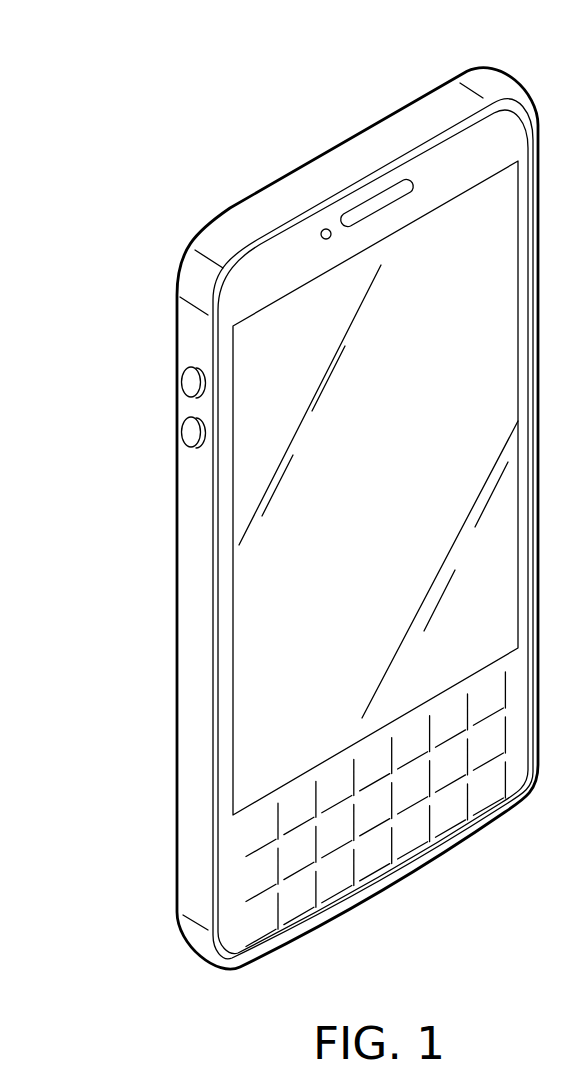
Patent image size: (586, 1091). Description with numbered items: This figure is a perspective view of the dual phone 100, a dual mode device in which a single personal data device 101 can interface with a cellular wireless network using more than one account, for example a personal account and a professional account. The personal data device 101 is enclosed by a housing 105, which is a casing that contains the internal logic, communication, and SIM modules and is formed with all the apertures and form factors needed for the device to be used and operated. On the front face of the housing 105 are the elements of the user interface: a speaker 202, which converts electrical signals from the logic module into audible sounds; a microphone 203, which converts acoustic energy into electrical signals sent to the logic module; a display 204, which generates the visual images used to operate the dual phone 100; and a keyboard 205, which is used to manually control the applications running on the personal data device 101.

The dual phone 100 is at (281, 487).
The personal data device 101 is at (281, 487).
The housing 105 is at (193, 587).
The speaker 202 is at (325, 229).
The microphone 203 is at (360, 213).
The display 204 is at (278, 664).
The keyboard 205 is at (375, 852).